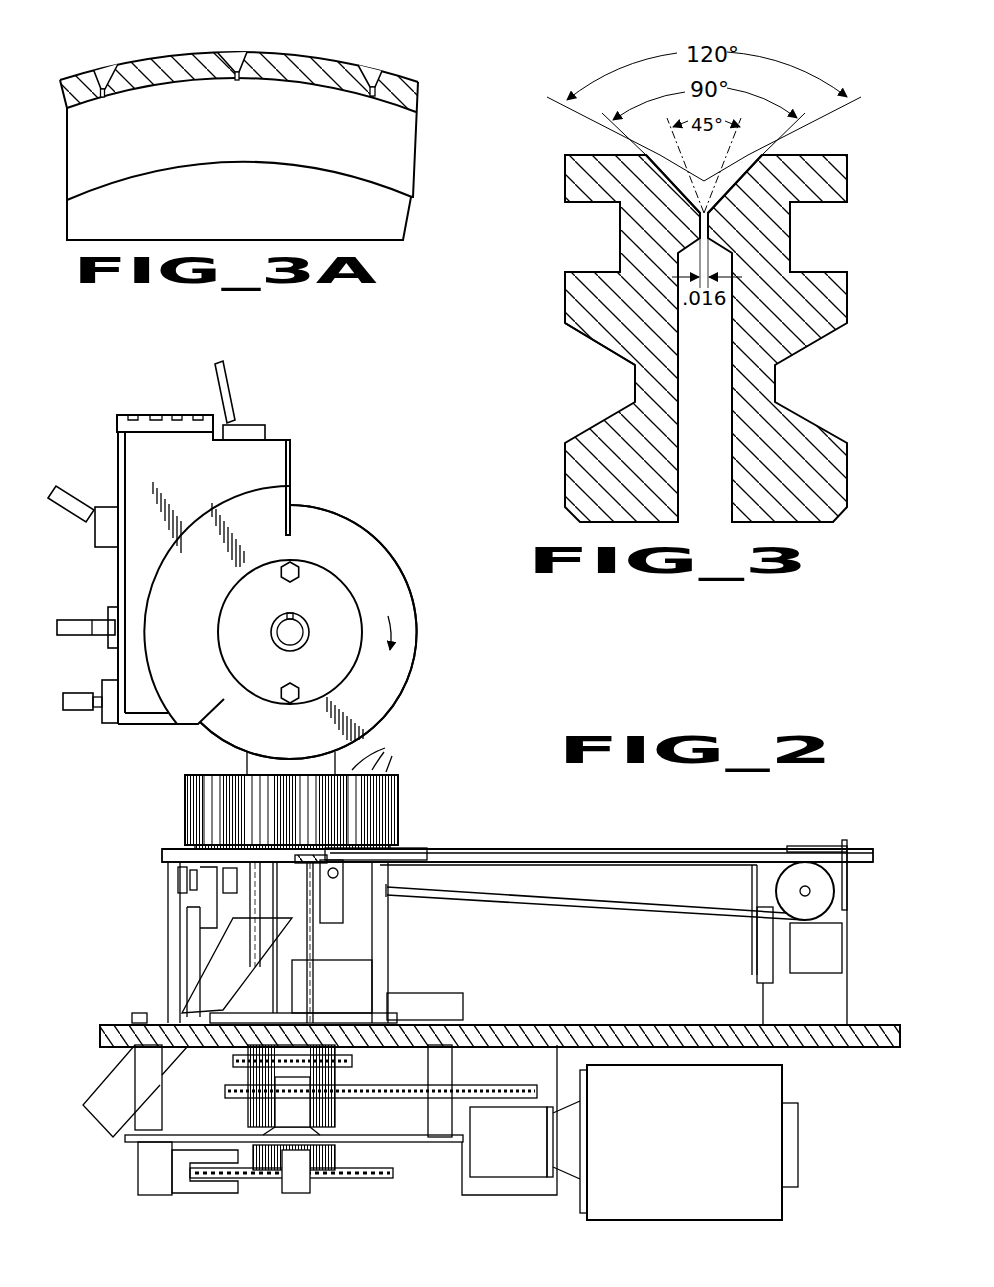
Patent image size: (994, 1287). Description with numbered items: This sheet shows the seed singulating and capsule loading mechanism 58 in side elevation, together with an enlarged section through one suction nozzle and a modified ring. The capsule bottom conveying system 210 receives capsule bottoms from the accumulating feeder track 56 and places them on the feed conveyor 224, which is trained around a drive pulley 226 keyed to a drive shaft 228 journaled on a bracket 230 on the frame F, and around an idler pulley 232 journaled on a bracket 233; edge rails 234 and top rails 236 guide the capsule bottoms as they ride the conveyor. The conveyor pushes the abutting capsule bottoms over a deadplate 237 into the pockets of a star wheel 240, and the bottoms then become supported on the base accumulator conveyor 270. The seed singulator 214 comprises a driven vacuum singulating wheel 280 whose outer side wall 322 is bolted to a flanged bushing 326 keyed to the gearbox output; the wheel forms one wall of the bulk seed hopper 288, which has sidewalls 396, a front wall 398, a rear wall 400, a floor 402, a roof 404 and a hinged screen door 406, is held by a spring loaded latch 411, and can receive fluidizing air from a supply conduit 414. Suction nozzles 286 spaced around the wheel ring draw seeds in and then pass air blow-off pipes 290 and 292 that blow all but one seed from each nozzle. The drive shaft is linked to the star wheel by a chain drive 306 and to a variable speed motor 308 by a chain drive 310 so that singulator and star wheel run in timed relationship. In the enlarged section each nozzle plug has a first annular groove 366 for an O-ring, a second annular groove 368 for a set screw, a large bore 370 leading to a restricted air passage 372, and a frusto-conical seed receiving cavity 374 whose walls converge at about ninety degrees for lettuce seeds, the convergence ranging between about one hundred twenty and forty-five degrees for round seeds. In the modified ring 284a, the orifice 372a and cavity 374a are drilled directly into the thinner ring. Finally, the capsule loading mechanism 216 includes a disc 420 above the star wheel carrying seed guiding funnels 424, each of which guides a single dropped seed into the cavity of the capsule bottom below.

In FIG. 2, the accumulating feeder track 56 is at (858, 842).
In FIG. 2, the seed singulating and capsule loading mechanism 58 is at (386, 506).
In FIG. 2, the capsule bottom conveying system 210 is at (575, 840).
In FIG. 2, the seed singulator 214 is at (352, 480).
In FIG. 2, the capsule loading mechanism 216 is at (183, 800).
In FIG. 2, the feed conveyor 224 is at (535, 907).
In FIG. 2, the drive pulley 226 is at (776, 885).
In FIG. 2, the drive shaft 228 is at (808, 891).
In FIG. 2, the bracket 230 is at (772, 939).
In FIG. 2, the idler pulley 232 is at (388, 883).
In FIG. 2, the bracket 233 is at (344, 912).
In FIG. 2, the edge rails 234 is at (507, 856).
In FIG. 2, the top rails 236 is at (417, 848).
In FIG. 2, the deadplate 237 is at (161, 857).
In FIG. 2, the star wheel 240 is at (374, 843).
In FIG. 2, the base accumulator conveyor 270 is at (176, 878).
In FIG. 2, the vacuum singulating wheel 280 is at (390, 550).
In FIG. 3A, the singulating wheel ring 284a is at (410, 108).
In FIG. 3, the suction nozzle 286 is at (560, 303).
In FIG. 2, the bulk seed hopper 288 is at (116, 437).
In FIG. 2, the air blow-off pipe 290 is at (93, 523).
In FIG. 2, the air blow-off pipe 292 is at (233, 420).
In FIG. 2, the chain drive 306 is at (353, 1062).
In FIG. 2, the variable speed motor 308 is at (700, 1132).
In FIG. 2, the chain drive 310 is at (476, 1086).
In FIG. 2, the outer side wall 322 is at (411, 622).
In FIG. 2, the flanged bushing 326 is at (310, 681).
In FIG. 3, the first annular groove 366 is at (597, 203).
In FIG. 3, the second annular groove 368 is at (592, 340).
In FIG. 3, the bore 370 is at (728, 378).
In FIG. 3, the restricted air passage 372 is at (709, 228).
In FIG. 3A, the orifice 372a is at (237, 82).
In FIG. 3, the frusto-conical seed receiving cavity 374 is at (684, 182).
In FIG. 3A, the frusto-conical seed receiving cavity 374a is at (230, 52).
In FIG. 2, the hopper sidewall 396 is at (237, 478).
In FIG. 2, the front wall 398 is at (122, 572).
In FIG. 2, the rear wall 400 is at (291, 461).
In FIG. 2, the floor 402 is at (168, 724).
In FIG. 2, the roof 404 is at (283, 438).
In FIG. 2, the hinged screen door 406 is at (153, 414).
In FIG. 2, the spring loaded latch 411 is at (75, 621).
In FIG. 2, the supply conduit 414 is at (81, 696).
In FIG. 2, the disc 420 is at (186, 845).
In FIG. 2, the seed guiding funnel 424 is at (185, 776).
In FIG. 2, the frame F is at (875, 1026).